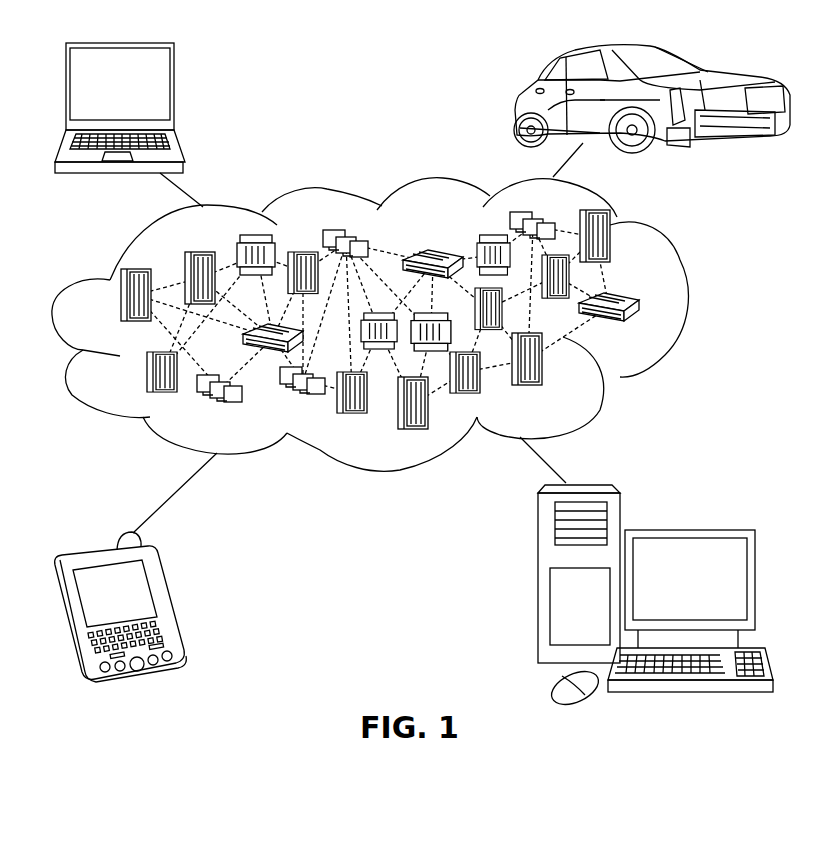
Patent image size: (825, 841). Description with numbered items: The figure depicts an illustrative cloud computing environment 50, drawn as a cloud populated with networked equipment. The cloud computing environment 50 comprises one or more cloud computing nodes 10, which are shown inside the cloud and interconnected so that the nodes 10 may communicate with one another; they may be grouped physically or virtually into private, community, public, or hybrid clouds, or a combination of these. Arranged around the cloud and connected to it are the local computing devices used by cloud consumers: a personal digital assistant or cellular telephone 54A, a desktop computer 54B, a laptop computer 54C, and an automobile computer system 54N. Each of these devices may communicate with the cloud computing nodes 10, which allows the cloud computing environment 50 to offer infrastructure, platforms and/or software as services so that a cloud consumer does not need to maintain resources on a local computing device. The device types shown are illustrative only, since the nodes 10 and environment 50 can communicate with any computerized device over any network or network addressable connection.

The cloud computing nodes 10 is at (642, 328).
The cloud computing environment 50 is at (688, 302).
The personal digital assistant (PDA) or cellular telephone 54A is at (163, 603).
The desktop computer 54B is at (688, 530).
The laptop computer 54C is at (174, 93).
The automobile computer system 54N is at (517, 106).